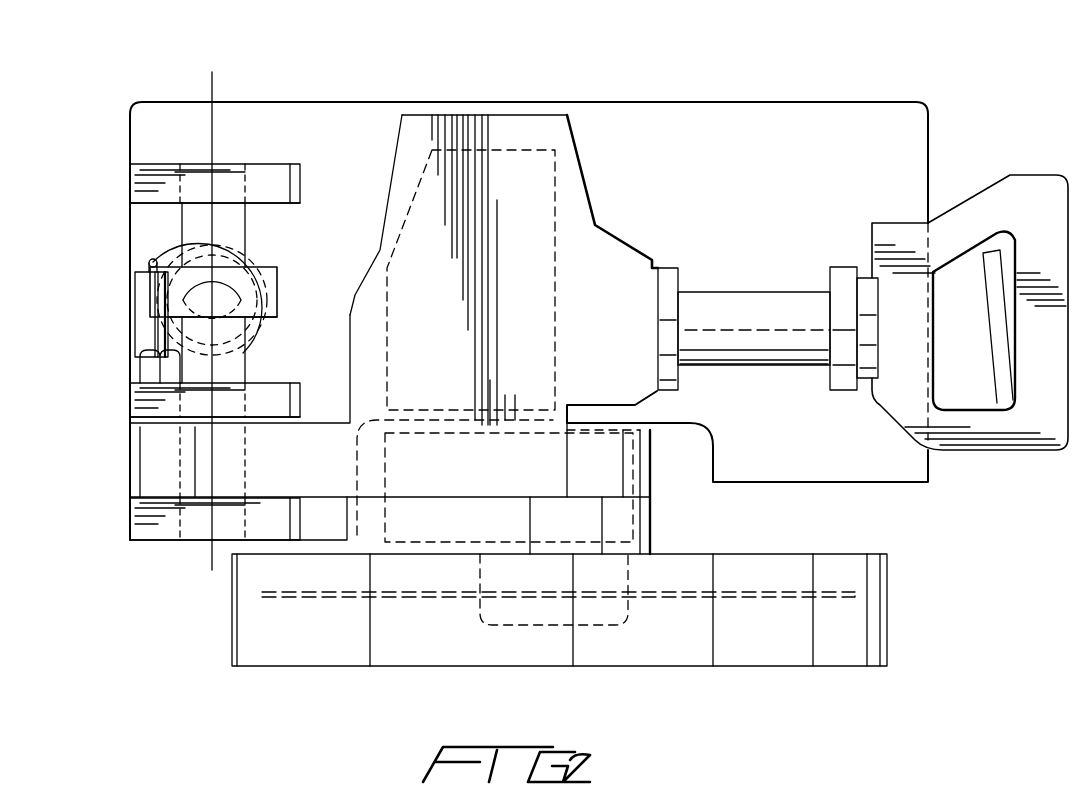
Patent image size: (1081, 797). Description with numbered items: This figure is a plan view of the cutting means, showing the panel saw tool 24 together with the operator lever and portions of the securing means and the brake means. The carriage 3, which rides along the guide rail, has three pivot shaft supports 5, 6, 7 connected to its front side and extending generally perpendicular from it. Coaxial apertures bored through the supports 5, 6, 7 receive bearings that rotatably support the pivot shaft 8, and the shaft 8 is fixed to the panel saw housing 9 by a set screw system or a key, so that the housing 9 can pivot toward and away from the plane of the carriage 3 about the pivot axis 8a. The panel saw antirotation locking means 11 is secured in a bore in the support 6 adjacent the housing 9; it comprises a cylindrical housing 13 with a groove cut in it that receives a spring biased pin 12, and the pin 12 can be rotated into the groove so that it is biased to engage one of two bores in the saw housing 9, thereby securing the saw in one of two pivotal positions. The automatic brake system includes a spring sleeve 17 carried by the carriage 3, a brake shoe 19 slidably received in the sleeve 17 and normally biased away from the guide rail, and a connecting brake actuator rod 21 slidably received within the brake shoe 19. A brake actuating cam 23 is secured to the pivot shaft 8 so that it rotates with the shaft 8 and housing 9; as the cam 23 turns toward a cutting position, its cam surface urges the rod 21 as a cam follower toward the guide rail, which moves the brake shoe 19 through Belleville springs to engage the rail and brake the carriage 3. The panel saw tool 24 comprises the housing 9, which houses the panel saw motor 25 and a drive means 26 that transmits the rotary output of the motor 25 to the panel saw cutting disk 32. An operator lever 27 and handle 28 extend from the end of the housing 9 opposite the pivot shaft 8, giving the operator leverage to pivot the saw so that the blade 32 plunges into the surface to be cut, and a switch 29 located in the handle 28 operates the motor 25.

The carriage 3 is at (175, 105).
The pivot shaft support 5 is at (140, 183).
The pivot shaft support 6 is at (140, 403).
The pivot shaft support 7 is at (140, 520).
The pivot shaft 8 is at (180, 222).
The pivot axis 8a is at (213, 148).
The panel saw housing 9 is at (150, 458).
The panel saw antirotation locking means 11 is at (136, 302).
The spring biased pin 12 is at (149, 264).
The cylindrical housing 13 is at (140, 337).
The spring sleeve 17 is at (255, 248).
The brake shoe 19 is at (265, 318).
The connecting brake actuator rod 21 is at (232, 290).
The brake actuating cam 23 is at (283, 288).
The panel saw tool 24 is at (518, 97).
The panel saw motor 25 is at (555, 183).
The drive means 26 is at (640, 515).
The operator lever 27 is at (765, 300).
The handle 28 is at (1030, 188).
The switch 29 is at (990, 338).
The panel saw cutting disk 32 is at (335, 600).